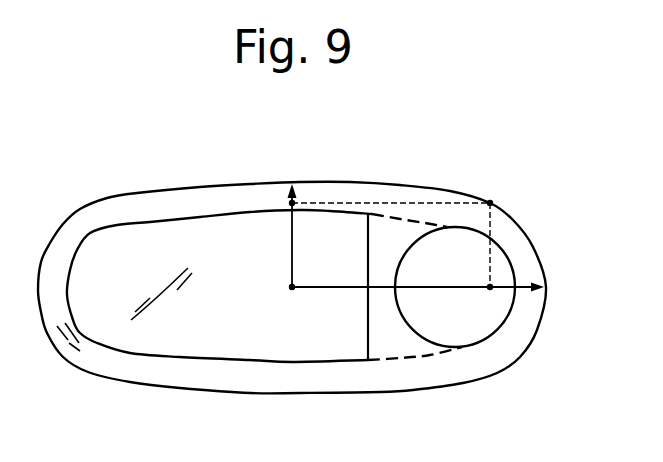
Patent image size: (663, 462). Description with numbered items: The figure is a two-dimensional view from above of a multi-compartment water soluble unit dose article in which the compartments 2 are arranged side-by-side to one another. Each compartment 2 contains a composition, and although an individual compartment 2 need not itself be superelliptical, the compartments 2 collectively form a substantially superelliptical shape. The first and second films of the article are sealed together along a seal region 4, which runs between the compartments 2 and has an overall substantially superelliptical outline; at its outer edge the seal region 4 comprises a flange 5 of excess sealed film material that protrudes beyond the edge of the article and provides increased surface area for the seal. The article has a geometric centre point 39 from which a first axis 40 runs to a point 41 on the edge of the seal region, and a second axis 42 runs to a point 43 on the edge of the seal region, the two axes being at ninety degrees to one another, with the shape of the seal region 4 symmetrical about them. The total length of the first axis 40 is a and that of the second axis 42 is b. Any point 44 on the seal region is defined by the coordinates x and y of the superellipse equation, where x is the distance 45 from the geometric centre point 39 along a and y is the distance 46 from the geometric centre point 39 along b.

The compartment 2 is at (147, 237).
The seal region 4 is at (392, 362).
The flange 5 is at (97, 363).
The geometric centre point 39 is at (292, 287).
The first axis 40 is at (293, 230).
The point on the edge of the seal region 41 is at (292, 180).
The second axis 42 is at (480, 287).
The point on the edge of the seal region 43 is at (547, 287).
The point on the seal region 44 is at (490, 203).
The distance along a 45 is at (373, 203).
The distance along b 46 is at (492, 232).